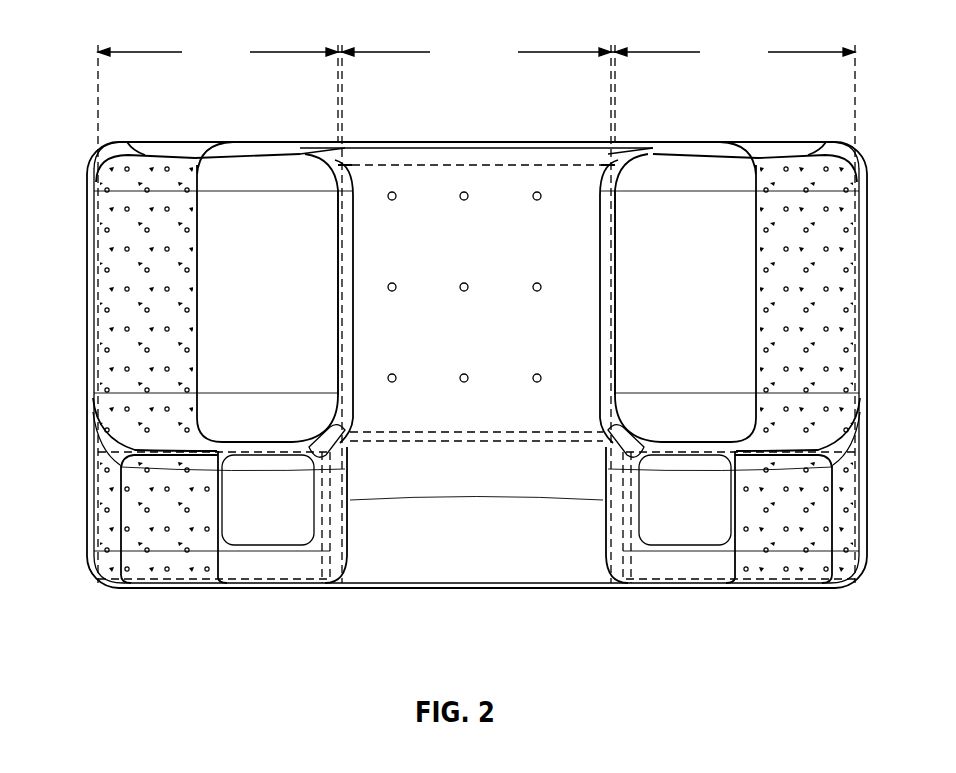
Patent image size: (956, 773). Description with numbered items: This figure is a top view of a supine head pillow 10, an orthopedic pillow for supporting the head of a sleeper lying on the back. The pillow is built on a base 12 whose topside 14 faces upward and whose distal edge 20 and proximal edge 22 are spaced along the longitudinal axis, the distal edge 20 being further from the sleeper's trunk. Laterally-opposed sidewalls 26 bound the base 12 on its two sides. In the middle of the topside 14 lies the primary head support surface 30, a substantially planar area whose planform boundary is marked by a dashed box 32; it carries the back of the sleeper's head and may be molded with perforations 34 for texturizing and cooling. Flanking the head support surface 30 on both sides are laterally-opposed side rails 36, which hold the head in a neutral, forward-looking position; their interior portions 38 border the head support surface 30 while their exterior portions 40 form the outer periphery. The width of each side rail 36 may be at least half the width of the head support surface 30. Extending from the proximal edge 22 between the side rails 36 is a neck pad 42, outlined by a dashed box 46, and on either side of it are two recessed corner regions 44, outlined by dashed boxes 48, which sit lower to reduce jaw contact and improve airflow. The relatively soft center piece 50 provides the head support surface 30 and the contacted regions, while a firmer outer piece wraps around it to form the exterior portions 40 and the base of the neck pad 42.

The supine head pillow 10 is at (119, 43).
The base 12 is at (569, 147).
The topside 14 is at (417, 177).
The distal edge 20 is at (492, 141).
The proximal edge 22 is at (490, 438).
The sidewalls 26 is at (85, 231).
The primary head support surface 30 is at (573, 266).
The dashed box 32 is at (338, 275).
The perforations 34 is at (395, 200).
The laterally-opposed side rails 36 is at (95, 286).
The interior portions 38 is at (321, 337).
The exterior portions 40 is at (141, 332).
The neck pad 42 is at (499, 535).
The recessed corner regions 44 is at (206, 518).
The dashed box 46 is at (505, 589).
The dashed boxes 48 is at (155, 588).
The relatively soft center piece 50 is at (688, 148).